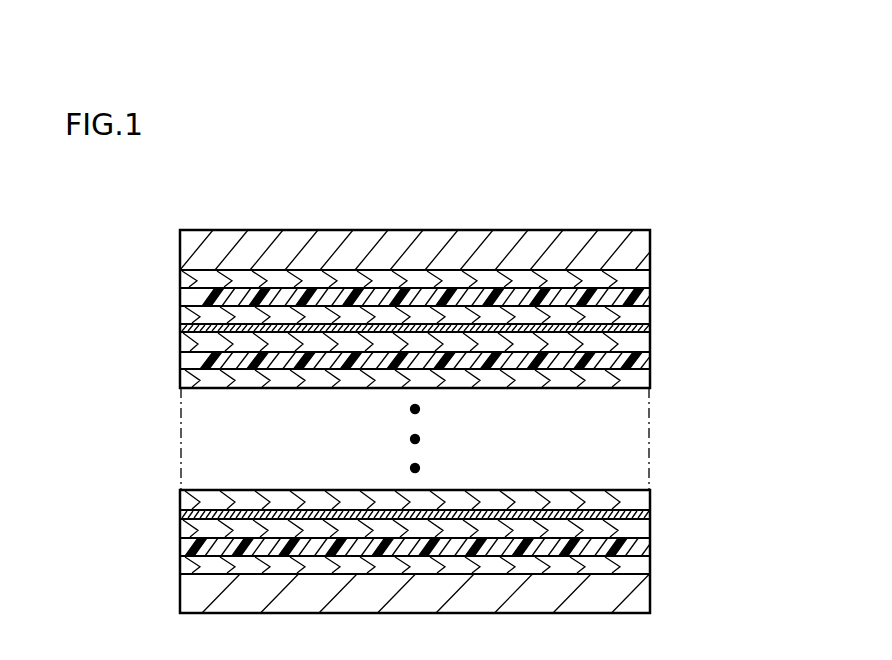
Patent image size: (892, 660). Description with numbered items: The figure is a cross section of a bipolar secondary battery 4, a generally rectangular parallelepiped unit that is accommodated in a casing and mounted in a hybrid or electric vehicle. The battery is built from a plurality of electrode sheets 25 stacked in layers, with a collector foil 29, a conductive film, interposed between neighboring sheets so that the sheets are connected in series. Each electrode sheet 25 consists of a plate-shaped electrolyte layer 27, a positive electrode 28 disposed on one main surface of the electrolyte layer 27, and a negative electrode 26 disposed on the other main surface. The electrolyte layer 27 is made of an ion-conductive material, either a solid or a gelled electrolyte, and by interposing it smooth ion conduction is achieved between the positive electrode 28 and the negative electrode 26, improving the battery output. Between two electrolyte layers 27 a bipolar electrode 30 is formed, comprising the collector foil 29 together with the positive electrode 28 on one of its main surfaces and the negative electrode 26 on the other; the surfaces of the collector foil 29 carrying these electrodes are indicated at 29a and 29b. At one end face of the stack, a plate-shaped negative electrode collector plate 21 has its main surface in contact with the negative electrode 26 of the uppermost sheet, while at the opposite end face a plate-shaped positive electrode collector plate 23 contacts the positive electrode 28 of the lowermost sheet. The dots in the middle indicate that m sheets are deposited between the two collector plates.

The bipolar secondary battery 4 is at (157, 208).
The negative electrode collector plate 21 is at (637, 247).
The positive electrode collector plate 23 is at (637, 590).
The electrode sheet 25 is at (703, 248).
The negative electrode 26 is at (625, 278).
The electrolyte layer 27 is at (632, 298).
The positive electrode 28 is at (622, 316).
The collector foil 29 is at (212, 329).
The first surface of intermediate layer 29a is at (206, 360).
The second surface of intermediate layer 29b is at (206, 297).
The bipolar electrode 30 is at (123, 472).